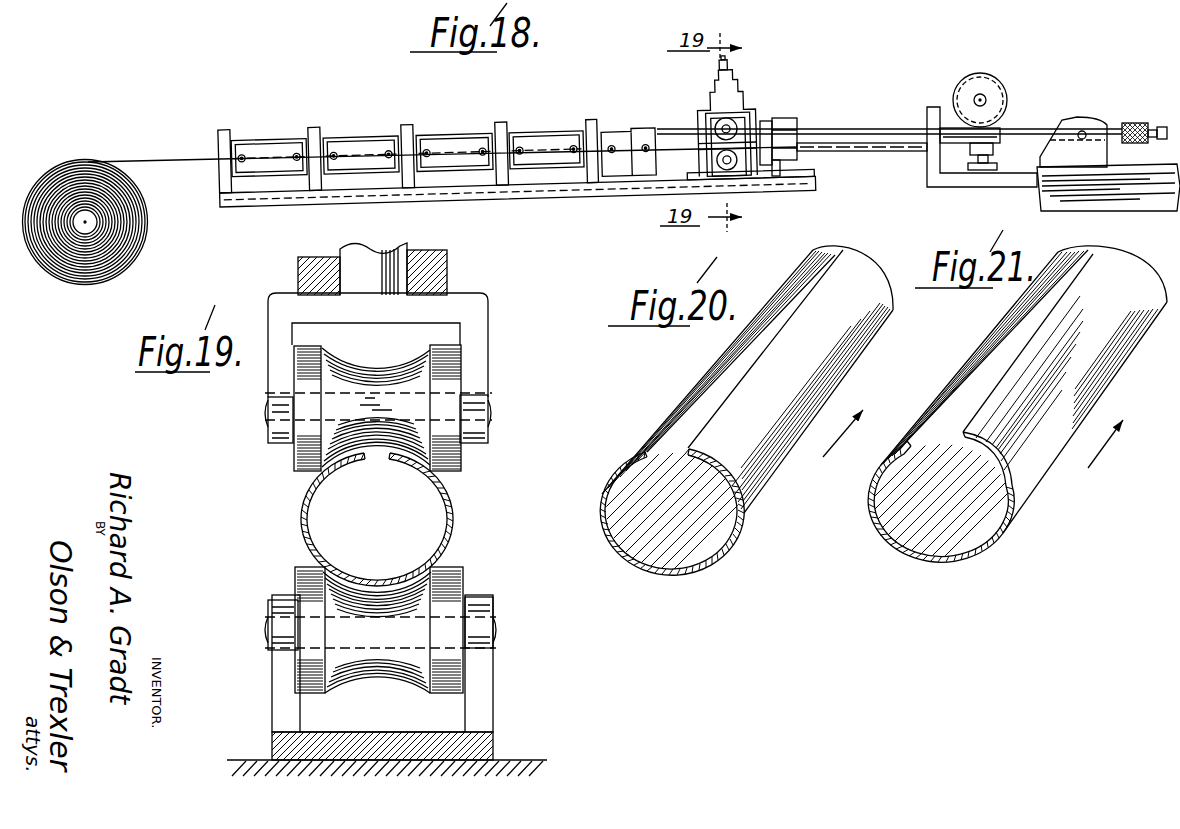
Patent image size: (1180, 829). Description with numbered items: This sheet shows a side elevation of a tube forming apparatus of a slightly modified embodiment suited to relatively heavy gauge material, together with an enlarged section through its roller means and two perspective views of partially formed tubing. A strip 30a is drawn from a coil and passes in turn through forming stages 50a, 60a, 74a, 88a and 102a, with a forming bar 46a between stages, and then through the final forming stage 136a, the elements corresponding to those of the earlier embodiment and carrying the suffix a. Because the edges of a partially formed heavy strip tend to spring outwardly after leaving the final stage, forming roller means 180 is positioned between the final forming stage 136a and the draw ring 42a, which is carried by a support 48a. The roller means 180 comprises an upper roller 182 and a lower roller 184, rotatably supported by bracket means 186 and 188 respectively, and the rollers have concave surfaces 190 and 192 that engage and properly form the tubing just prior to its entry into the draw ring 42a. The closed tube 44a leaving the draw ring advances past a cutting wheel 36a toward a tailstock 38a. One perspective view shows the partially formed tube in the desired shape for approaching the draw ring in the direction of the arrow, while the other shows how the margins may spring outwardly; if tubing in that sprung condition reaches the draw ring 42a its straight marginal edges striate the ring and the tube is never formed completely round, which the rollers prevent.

In FIG. 18, the strip 30a is at (167, 158).
In FIG. 19, the strip 30a is at (303, 508).
In FIG. 20, the strip 30a is at (670, 577).
In FIG. 21, the strip 30a is at (923, 560).
In FIG. 18, the forming stage 50a is at (234, 126).
In FIG. 18, the forming stage 60a is at (323, 126).
In FIG. 18, the forming stage 74a is at (411, 121).
In FIG. 18, the forming bar 46a is at (456, 131).
In FIG. 18, the forming stage 88a is at (509, 119).
In FIG. 18, the forming stage 102a is at (594, 119).
In FIG. 18, the final forming stage 136a is at (630, 128).
In FIG. 18, the forming roller means 180 is at (759, 89).
In FIG. 19, the forming roller means 180 is at (499, 329).
In FIG. 18, the draw ring support 48a is at (767, 120).
In FIG. 18, the draw ring 42a is at (787, 126).
In FIG. 18, the formed tube 44a is at (800, 168).
In FIG. 18, the cutting wheel 36a is at (995, 71).
In FIG. 18, the tailstock 38a is at (1109, 112).
In FIG. 19, the concave surface 190 is at (373, 367).
In FIG. 19, the bracket means 186 is at (473, 367).
In FIG. 19, the upper roller 182 is at (456, 459).
In FIG. 19, the lower roller 184 is at (467, 571).
In FIG. 19, the bracket means 188 is at (478, 687).
In FIG. 19, the concave surface 192 is at (382, 683).